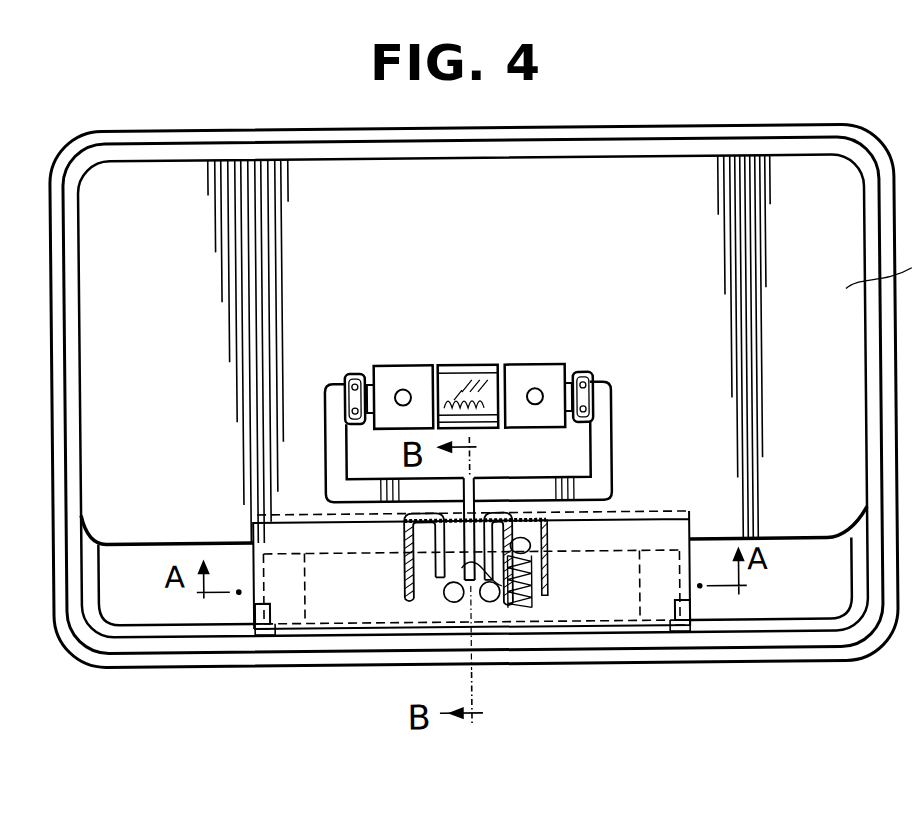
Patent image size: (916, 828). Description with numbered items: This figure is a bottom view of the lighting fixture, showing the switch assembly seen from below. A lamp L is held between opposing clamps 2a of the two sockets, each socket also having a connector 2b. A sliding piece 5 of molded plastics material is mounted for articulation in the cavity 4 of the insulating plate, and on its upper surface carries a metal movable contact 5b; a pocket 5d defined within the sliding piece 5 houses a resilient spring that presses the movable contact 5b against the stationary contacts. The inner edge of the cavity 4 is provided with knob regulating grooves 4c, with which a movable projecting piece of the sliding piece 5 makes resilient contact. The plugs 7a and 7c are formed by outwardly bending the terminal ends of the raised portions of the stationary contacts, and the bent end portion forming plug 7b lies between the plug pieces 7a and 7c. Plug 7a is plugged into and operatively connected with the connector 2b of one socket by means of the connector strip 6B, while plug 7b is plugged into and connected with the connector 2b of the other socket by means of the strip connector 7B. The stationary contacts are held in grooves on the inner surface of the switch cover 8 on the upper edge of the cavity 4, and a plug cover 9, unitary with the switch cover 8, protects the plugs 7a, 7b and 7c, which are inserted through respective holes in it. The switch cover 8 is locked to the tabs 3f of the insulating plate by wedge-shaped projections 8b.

The clamp 2a is at (401, 372).
The connector 2b is at (352, 374).
The lamp L is at (470, 372).
The connector strip 6B is at (334, 437).
The strip connector 7B is at (613, 436).
The plug 7c is at (518, 520).
The switch cover 8 is at (665, 532).
The cavity 4 is at (281, 568).
The sliding piece 5 is at (303, 588).
The knob regulating grooves 4c is at (553, 545).
The plug cover 9 is at (403, 580).
The plug 7a is at (434, 568).
The pocket 5d is at (552, 590).
The plug 7b is at (457, 632).
The movable contact 5b is at (491, 608).
The tab 3f is at (262, 630).
The wedge-shaped projection 8b is at (255, 612).